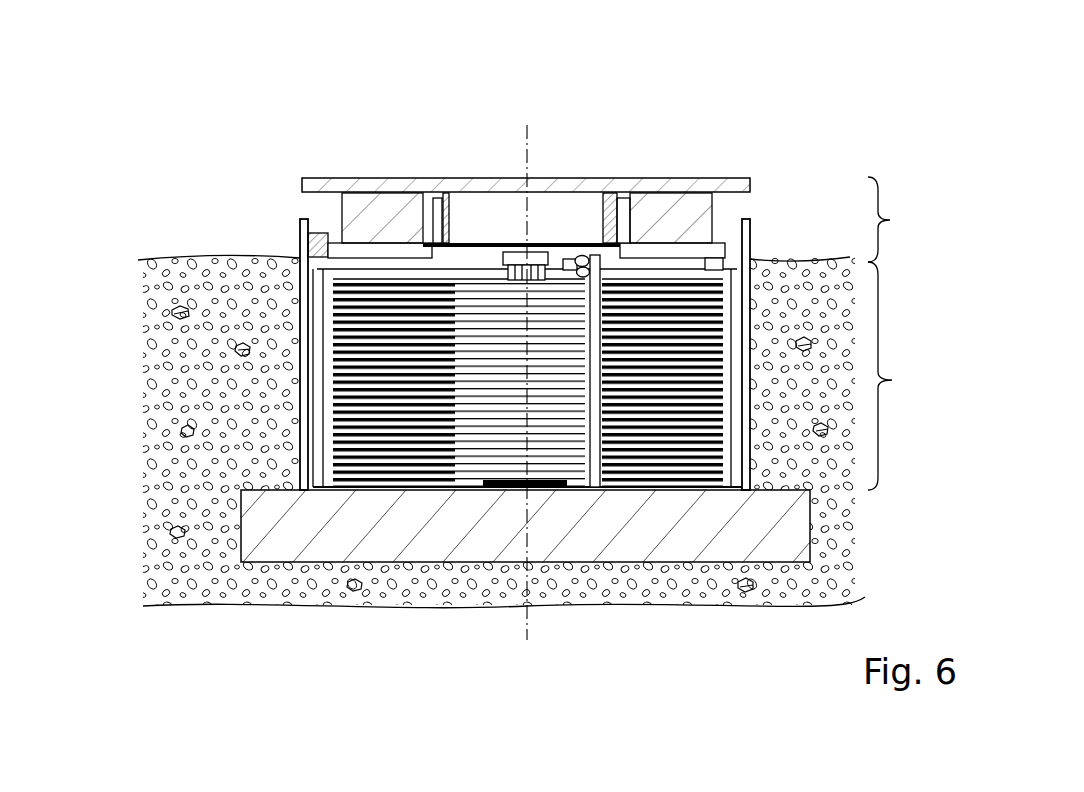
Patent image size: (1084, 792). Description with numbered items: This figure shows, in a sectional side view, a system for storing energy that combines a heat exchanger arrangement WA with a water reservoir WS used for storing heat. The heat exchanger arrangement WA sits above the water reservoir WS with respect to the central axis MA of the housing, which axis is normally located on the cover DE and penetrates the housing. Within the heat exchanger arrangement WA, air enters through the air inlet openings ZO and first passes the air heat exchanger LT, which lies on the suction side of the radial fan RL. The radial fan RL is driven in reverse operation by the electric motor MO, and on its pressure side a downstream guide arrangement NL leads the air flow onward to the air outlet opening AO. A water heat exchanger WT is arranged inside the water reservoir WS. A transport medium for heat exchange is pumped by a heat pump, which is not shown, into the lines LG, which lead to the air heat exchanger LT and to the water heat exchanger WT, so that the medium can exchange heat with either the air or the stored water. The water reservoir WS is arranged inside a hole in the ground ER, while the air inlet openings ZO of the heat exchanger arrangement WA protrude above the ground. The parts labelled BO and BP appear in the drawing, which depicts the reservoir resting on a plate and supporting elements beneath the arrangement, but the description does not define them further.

The cover DE is at (687, 187).
The air heat exchanger LT is at (383, 212).
The air outlet opening AO is at (463, 203).
The guide arrangement NL is at (606, 235).
The radial fan RL is at (621, 198).
The bottom plate of cover unit BO is at (714, 245).
The electric motor MO is at (512, 245).
The lines LG is at (585, 253).
The air inlet openings ZO is at (305, 205).
The water heat exchanger WT is at (410, 327).
The ground ER is at (197, 372).
The base plate BP is at (745, 533).
The central axis MA is at (524, 622).
The heat exchanger arrangement WA is at (906, 219).
The water reservoir WS is at (906, 376).